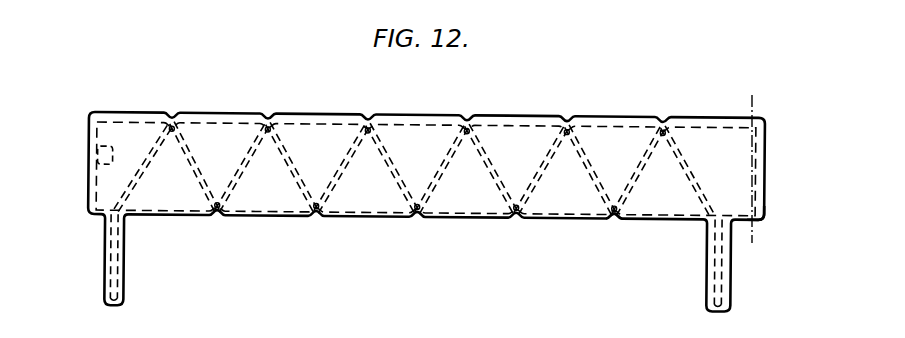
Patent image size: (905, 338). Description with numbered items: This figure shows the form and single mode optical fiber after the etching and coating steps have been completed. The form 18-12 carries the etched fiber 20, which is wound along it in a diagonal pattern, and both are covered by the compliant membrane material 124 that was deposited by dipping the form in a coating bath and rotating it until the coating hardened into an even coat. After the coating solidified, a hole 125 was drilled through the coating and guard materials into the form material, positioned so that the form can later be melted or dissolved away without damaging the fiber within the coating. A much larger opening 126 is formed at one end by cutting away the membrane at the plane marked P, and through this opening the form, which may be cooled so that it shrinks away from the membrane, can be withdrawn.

The reinforcing panel blank 18-12 is at (468, 218).
The diagonal strut pattern 20 is at (339, 185).
The compliant membrane material 124 is at (639, 224).
The hole 125 is at (100, 158).
The opening 126 is at (761, 229).
The plane P is at (759, 103).